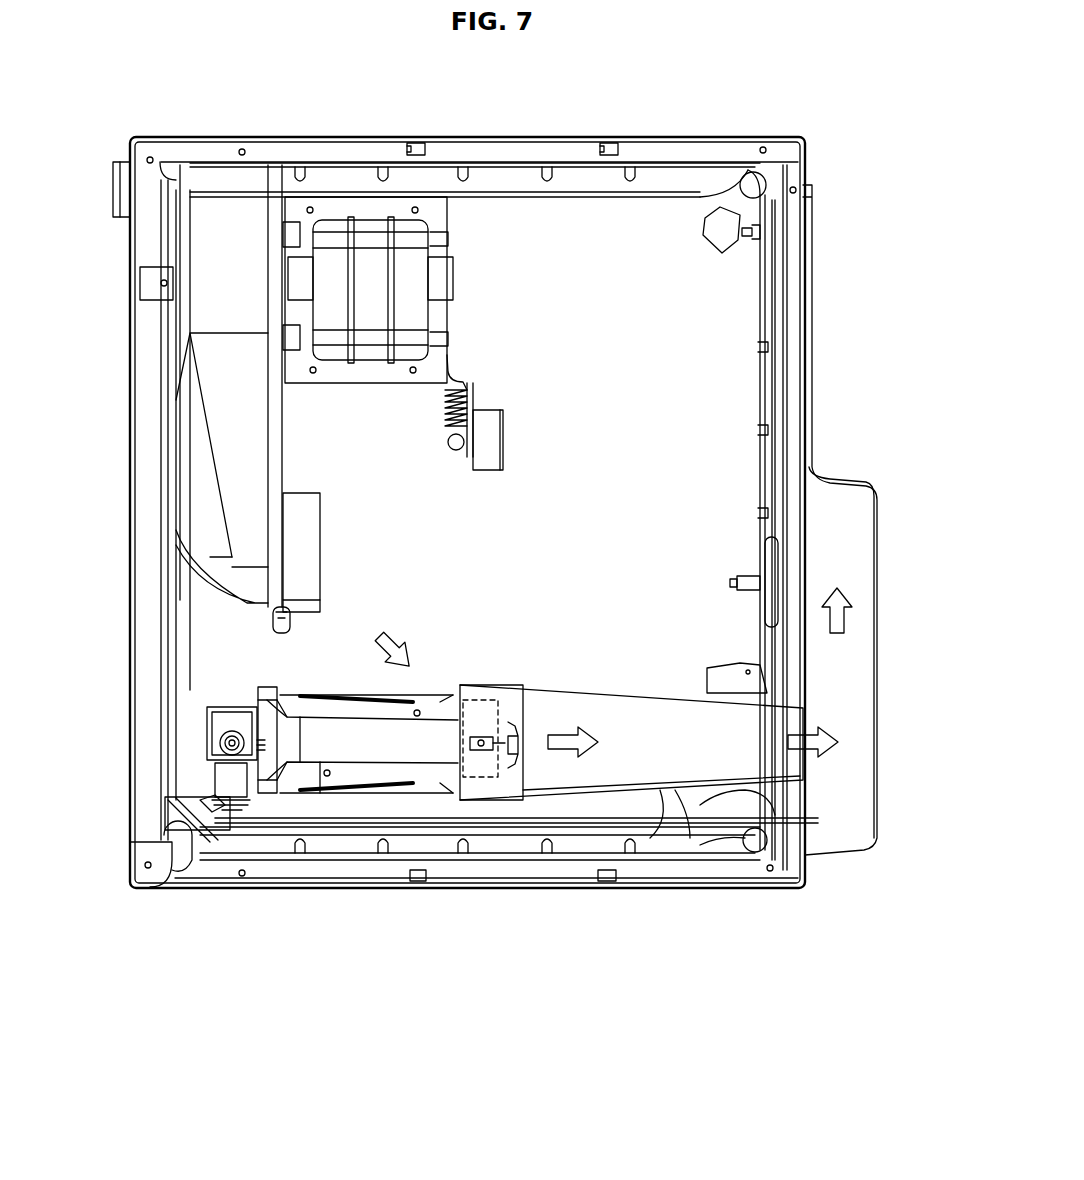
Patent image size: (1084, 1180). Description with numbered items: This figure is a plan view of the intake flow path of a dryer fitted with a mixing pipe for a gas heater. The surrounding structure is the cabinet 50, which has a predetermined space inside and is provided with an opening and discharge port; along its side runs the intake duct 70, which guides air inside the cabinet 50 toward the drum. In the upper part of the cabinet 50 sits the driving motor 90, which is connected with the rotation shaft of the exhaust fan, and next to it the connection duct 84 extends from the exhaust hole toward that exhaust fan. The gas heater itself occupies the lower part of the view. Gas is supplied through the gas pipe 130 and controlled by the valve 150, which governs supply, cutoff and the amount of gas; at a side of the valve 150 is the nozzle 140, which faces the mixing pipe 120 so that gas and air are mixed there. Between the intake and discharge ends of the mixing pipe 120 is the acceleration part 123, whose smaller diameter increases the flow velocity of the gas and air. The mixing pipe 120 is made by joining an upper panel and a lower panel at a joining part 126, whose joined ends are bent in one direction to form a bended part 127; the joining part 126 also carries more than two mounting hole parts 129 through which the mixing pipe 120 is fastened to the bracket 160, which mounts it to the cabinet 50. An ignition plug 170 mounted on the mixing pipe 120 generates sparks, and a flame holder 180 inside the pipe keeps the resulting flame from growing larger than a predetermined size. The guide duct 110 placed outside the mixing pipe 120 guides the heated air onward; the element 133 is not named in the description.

The cabinet 50 is at (528, 150).
The intake duct 70 is at (876, 664).
The connection duct 84 is at (232, 232).
The driving motor 90 is at (372, 233).
The guide duct 110 is at (625, 745).
The mixing pipe 120 is at (428, 733).
The acceleration part 123 is at (303, 768).
The joining part 126 is at (360, 777).
The bended part 127 is at (447, 790).
The mounting hole parts 129 is at (340, 780).
The gas pipe 130 is at (445, 825).
The drain block 133 is at (157, 885).
The nozzle 140 is at (205, 835).
The valve 150 is at (210, 805).
The bracket 160 is at (217, 712).
The ignition plug 170 is at (480, 700).
The flame holder 180 is at (522, 728).